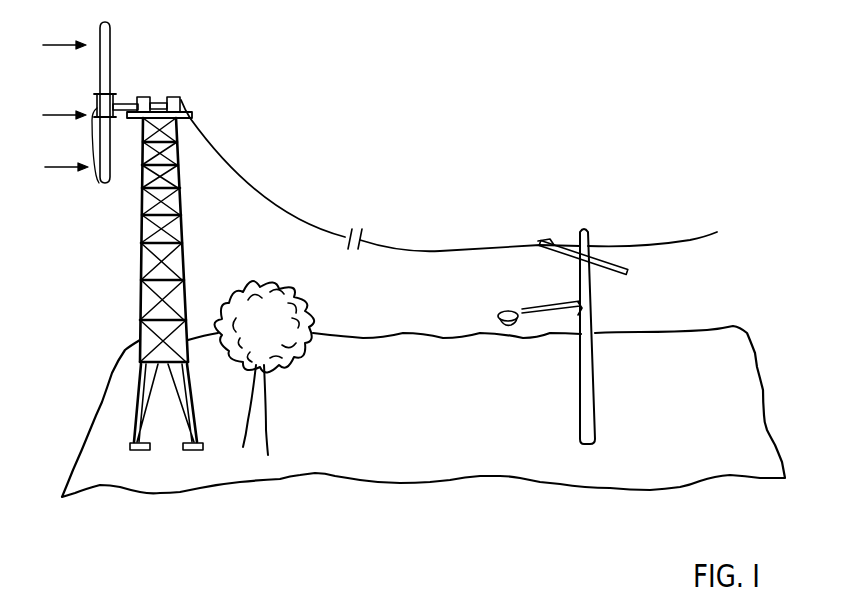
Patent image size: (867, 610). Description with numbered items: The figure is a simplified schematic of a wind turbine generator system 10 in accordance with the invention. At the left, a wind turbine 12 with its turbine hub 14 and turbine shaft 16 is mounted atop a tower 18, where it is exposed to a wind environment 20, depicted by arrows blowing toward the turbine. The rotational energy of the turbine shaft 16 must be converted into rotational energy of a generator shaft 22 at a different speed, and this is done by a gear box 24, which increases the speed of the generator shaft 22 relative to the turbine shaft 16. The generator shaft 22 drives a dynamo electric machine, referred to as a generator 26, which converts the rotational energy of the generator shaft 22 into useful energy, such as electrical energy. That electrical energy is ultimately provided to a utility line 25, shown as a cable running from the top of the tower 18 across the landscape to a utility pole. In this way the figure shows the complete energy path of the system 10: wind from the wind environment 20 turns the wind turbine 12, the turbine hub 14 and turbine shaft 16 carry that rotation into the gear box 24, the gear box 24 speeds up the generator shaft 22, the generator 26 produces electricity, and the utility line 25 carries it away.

The wind turbine generator system 10 is at (120, 246).
The wind turbine 12 is at (106, 36).
The turbine hub 14 is at (93, 158).
The turbine shaft 16 is at (130, 99).
The tower 18 is at (178, 200).
The wind environment 20 is at (70, 105).
The generator shaft 22 is at (165, 102).
The gear box 24 is at (147, 96).
The generator 26 is at (180, 97).
The utility line 25 is at (633, 248).